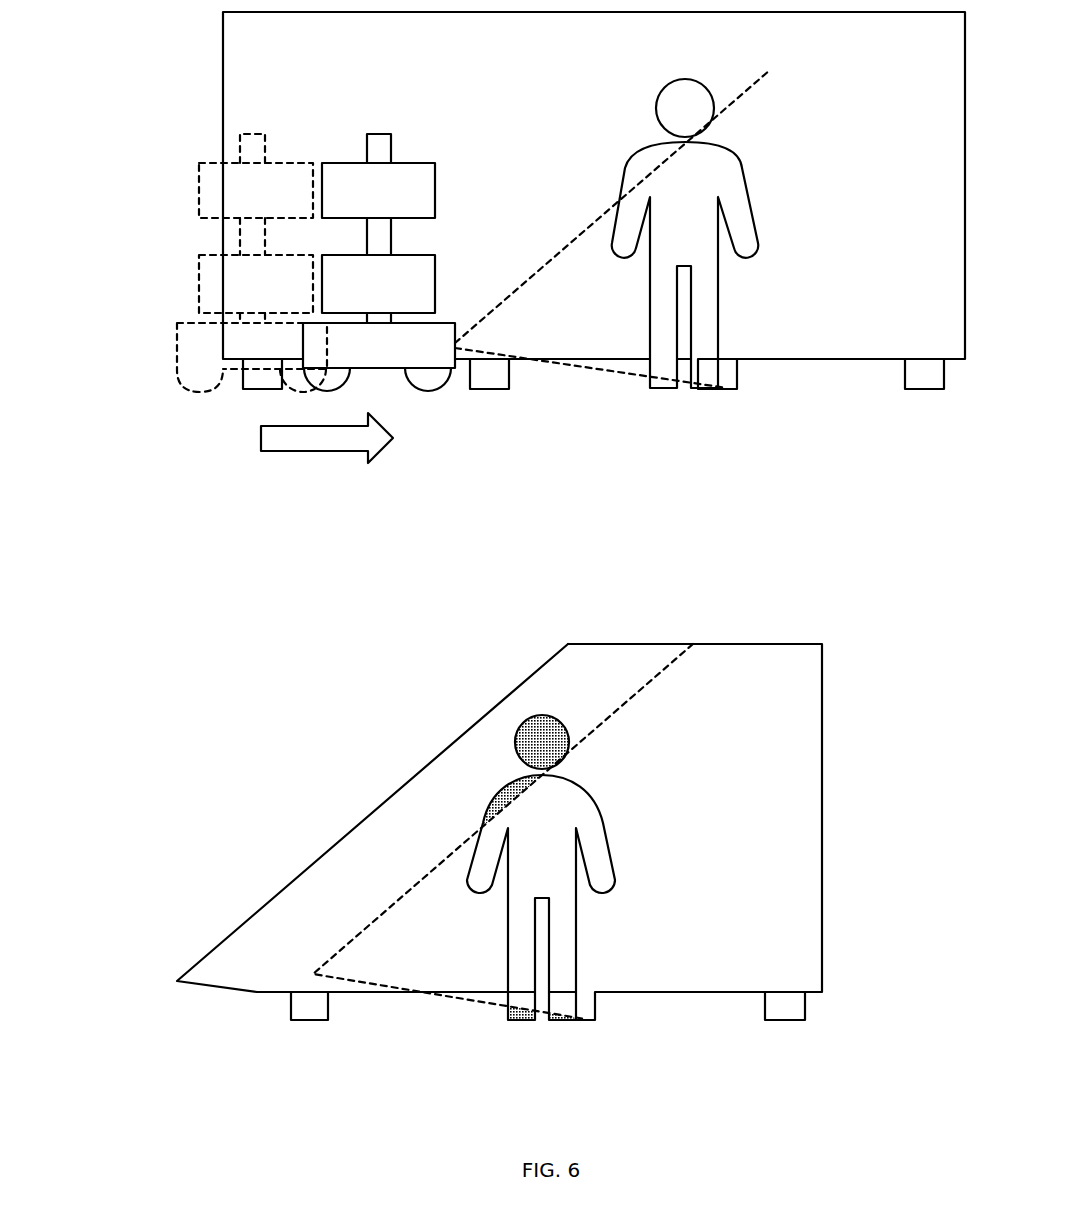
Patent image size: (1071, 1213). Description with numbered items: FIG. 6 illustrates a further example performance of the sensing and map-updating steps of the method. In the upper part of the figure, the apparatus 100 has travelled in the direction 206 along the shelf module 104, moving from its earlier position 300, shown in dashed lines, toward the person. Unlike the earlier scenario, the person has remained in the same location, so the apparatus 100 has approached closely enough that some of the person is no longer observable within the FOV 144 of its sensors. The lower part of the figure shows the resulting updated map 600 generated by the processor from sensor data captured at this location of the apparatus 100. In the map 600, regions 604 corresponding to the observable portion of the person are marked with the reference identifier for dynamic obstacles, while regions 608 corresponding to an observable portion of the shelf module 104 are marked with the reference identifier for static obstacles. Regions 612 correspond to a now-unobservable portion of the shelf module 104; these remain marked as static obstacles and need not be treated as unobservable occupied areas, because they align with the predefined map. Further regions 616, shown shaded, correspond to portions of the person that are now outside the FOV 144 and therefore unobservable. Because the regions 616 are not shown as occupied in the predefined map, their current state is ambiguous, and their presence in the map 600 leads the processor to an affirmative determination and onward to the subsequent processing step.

The apparatus 100 is at (372, 128).
The shelf module 104 is at (921, 47).
The FOV 144 is at (578, 235).
The direction 206 is at (327, 450).
The position 300 is at (176, 340).
The updated map 600 is at (575, 832).
The regions corresponding to the observable portion of the person 604 is at (553, 823).
The regions corresponding to an observable portion of the shelf module 608 is at (760, 840).
The regions corresponding to a now-unobservable portion of the shelf module 612 is at (365, 843).
The regions corresponding to portions of the person that are now unobservable 616 is at (523, 747).